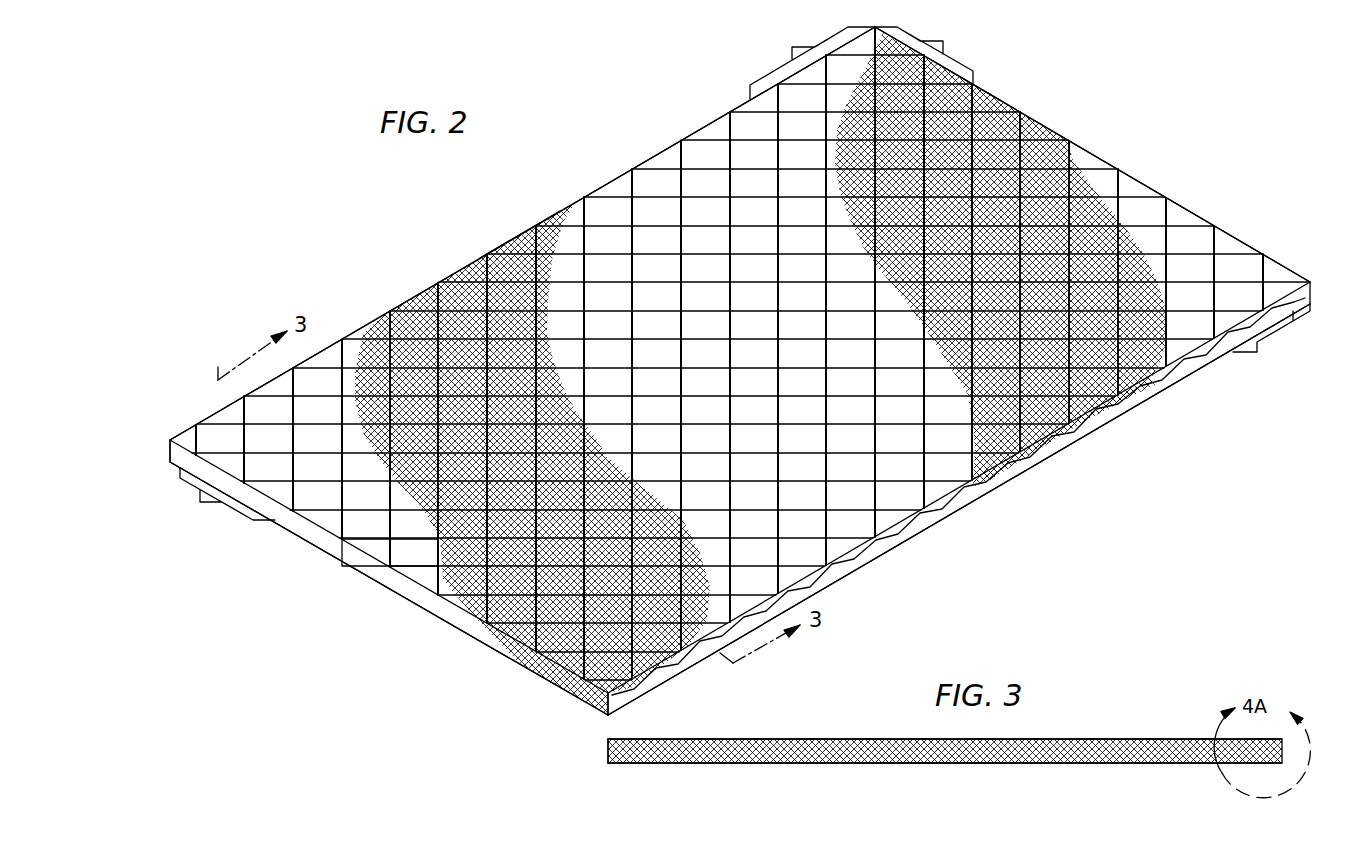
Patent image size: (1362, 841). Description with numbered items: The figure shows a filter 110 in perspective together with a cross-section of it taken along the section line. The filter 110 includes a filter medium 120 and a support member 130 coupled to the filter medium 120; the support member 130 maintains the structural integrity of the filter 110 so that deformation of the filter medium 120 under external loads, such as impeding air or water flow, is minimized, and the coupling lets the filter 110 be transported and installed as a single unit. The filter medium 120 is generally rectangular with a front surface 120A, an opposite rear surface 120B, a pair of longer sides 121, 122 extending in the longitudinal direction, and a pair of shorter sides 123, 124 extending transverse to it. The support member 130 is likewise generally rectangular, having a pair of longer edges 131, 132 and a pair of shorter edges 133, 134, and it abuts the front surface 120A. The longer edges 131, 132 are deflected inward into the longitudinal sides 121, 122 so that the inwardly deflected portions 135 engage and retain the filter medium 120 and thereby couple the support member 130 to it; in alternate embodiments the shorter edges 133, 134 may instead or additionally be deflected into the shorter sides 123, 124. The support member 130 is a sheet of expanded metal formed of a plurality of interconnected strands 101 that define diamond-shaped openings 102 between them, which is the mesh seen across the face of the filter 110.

In FIG. 2, the filter 110 is at (401, 262).
In FIG. 3, the filter 110 is at (1080, 787).
In FIG. 2, the interconnected strands 101 is at (383, 553).
In FIG. 2, the diamond-shaped openings 102 is at (413, 553).
In FIG. 2, the filter medium 120 is at (510, 267).
In FIG. 3, the filter medium 120 is at (788, 763).
In FIG. 2, the front surface 120A is at (1037, 130).
In FIG. 2, the rear surface 120B is at (1066, 432).
In FIG. 3, the rear surface 120B is at (900, 763).
In FIG. 2, the longer side 121 is at (990, 487).
In FIG. 2, the longer side 122 is at (603, 187).
In FIG. 2, the shorter side 123 is at (517, 660).
In FIG. 2, the shorter side 124 is at (1097, 153).
In FIG. 2, the support member 130 is at (672, 160).
In FIG. 3, the support member 130 is at (815, 739).
In FIG. 2, the longer edge 131 is at (830, 565).
In FIG. 2, the longer edge 132 is at (520, 250).
In FIG. 2, the shorter edge 133 is at (345, 541).
In FIG. 2, the shorter edge 134 is at (963, 83).
In FIG. 2, the inwardly deflected portions 135 is at (792, 47).
In FIG. 3, the inwardly deflected portions 135 is at (606, 755).